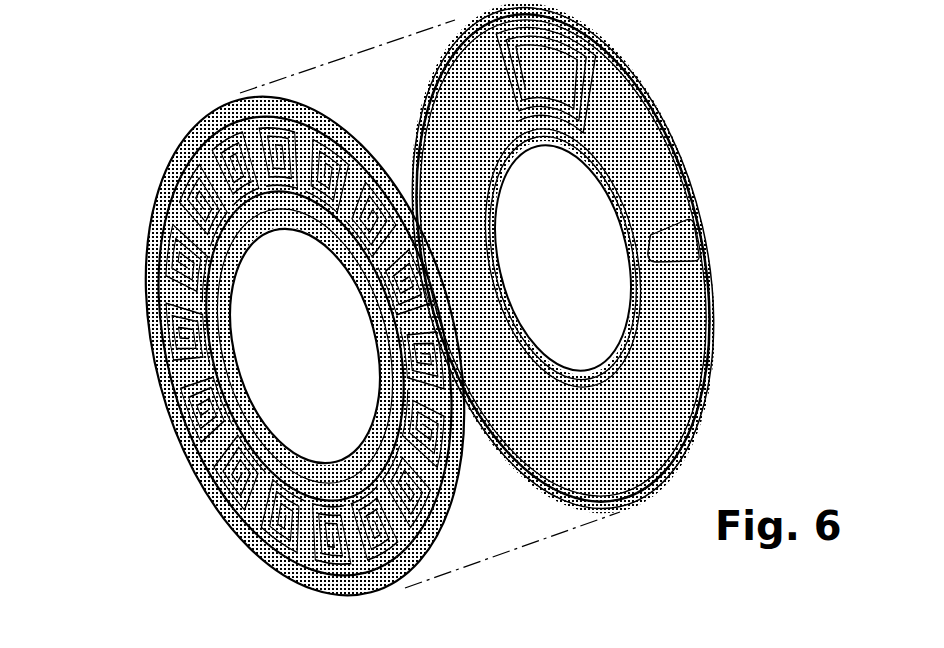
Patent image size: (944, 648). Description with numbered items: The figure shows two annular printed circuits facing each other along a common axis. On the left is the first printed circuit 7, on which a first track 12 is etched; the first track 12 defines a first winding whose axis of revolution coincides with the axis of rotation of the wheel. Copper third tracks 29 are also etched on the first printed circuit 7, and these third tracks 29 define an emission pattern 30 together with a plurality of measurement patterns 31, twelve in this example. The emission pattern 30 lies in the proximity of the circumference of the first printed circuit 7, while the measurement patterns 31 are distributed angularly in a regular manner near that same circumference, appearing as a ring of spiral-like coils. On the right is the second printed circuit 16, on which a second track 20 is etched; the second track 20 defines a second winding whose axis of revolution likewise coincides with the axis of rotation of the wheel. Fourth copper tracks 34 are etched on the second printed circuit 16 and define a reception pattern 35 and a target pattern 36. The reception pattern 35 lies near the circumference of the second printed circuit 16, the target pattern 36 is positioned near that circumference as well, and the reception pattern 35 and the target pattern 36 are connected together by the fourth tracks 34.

The first printed circuit 7 is at (298, 568).
The emission pattern 30 is at (197, 118).
The measurement patterns 31 is at (272, 196).
The first track 12 is at (228, 393).
The third tracks 29 is at (225, 462).
The second printed circuit 16 is at (683, 340).
The second track 20 is at (618, 378).
The fourth tracks 34 is at (586, 100).
The reception pattern 35 is at (697, 248).
The target pattern 36 is at (600, 120).